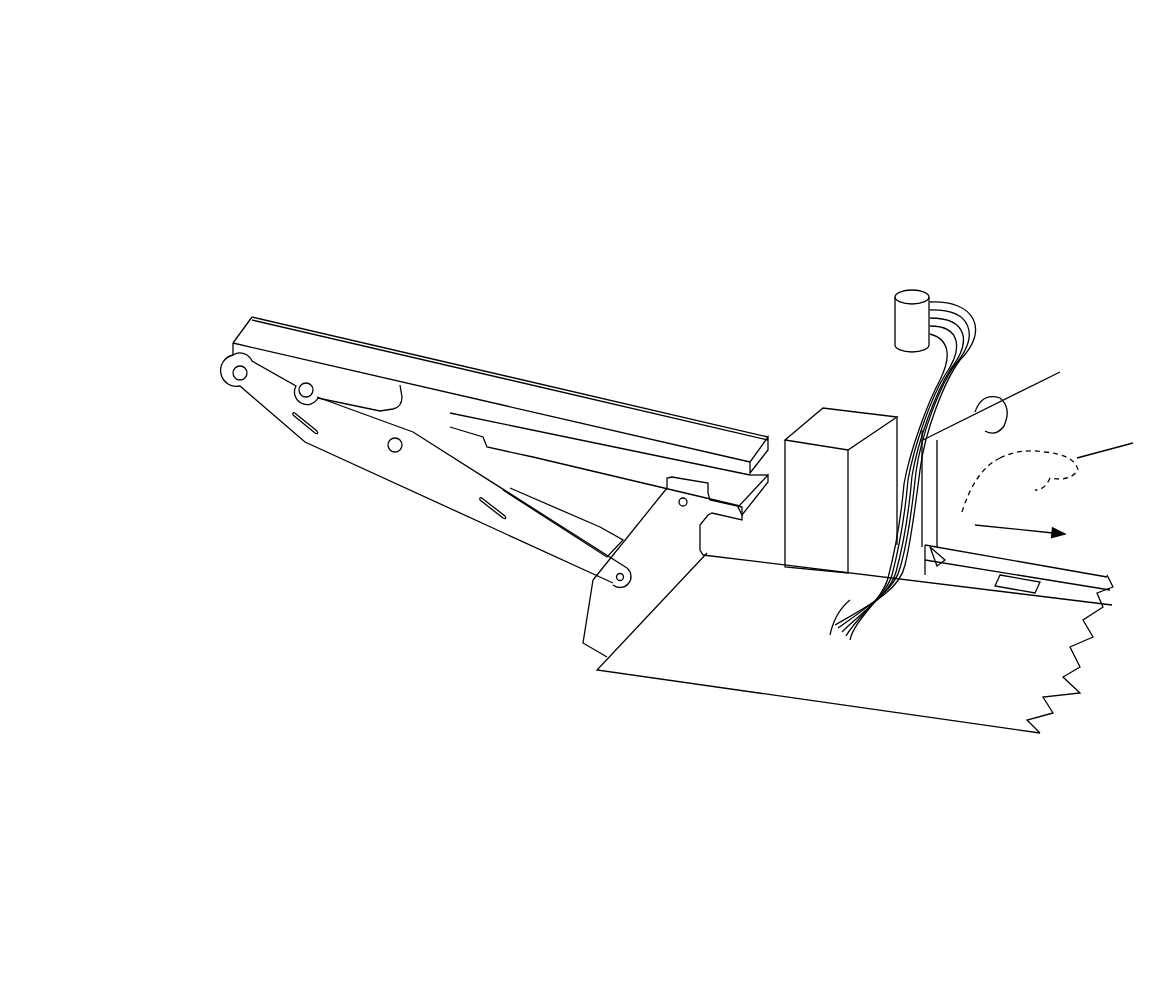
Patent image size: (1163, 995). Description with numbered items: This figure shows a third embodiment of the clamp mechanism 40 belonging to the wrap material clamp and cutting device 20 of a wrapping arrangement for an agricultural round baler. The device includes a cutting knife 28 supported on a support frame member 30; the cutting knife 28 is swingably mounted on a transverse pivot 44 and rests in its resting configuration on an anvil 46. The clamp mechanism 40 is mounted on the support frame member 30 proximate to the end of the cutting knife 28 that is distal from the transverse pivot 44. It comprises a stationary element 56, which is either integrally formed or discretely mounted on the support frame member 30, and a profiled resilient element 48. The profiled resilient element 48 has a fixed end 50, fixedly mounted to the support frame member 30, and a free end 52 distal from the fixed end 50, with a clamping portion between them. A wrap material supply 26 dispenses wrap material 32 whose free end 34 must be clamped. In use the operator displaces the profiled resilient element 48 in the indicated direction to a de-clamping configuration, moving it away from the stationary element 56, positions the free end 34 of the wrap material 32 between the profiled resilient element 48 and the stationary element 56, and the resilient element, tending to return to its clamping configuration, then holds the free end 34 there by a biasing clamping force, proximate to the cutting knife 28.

The wrap material clamp and cutting device 20 is at (536, 186).
The clamp mechanism 40 is at (392, 292).
The cutting knife 28 is at (567, 400).
The transverse pivot 44 is at (240, 380).
The anvil 46 is at (533, 452).
The support frame member 30 is at (773, 668).
The profiled resilient element 48 is at (943, 560).
The stationary element 56 is at (800, 430).
The wrap material supply 26 is at (895, 300).
The wrap material 32 is at (920, 408).
The free end 34 is at (858, 620).
The fixed end 50 is at (928, 565).
The free end 52 is at (983, 400).